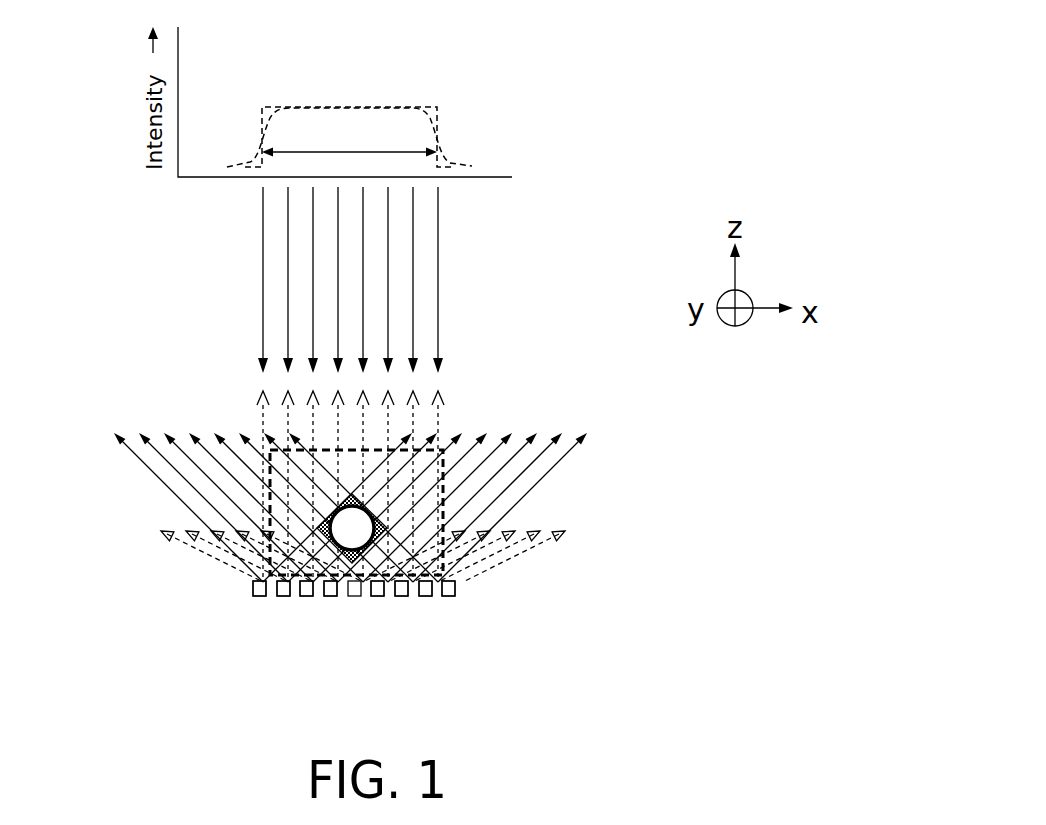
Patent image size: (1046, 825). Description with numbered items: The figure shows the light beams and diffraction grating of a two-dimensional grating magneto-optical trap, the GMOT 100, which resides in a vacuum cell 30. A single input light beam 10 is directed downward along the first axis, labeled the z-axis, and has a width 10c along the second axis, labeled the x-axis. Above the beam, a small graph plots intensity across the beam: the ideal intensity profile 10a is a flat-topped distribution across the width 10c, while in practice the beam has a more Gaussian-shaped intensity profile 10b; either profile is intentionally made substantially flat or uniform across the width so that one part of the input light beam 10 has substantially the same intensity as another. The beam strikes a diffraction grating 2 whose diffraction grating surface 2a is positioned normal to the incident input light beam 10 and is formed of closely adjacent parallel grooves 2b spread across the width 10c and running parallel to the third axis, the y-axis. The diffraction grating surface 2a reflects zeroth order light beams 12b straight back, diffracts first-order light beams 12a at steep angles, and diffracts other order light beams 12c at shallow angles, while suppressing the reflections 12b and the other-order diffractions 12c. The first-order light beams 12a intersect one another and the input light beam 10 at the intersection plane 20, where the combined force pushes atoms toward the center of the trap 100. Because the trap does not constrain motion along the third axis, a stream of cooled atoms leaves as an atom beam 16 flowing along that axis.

The 2D GMOT 100 is at (633, 135).
The input light beam 10 is at (438, 272).
The ideal intensity profile 10a is at (438, 112).
The Gaussian-shaped intensity profile 10b is at (452, 163).
The width 10c is at (364, 152).
The first-order light beams 12a is at (232, 449).
The zeroth order light beams 12b is at (438, 417).
The other order light beams 12c is at (180, 534).
The vacuum cell 30 is at (268, 500).
The diffraction grating 2 is at (268, 597).
The diffraction grating surface 2a is at (268, 550).
The closely adjacent parallel grooves 2b is at (405, 590).
The intersection plane 20 is at (376, 533).
The atom beam 16 is at (362, 566).